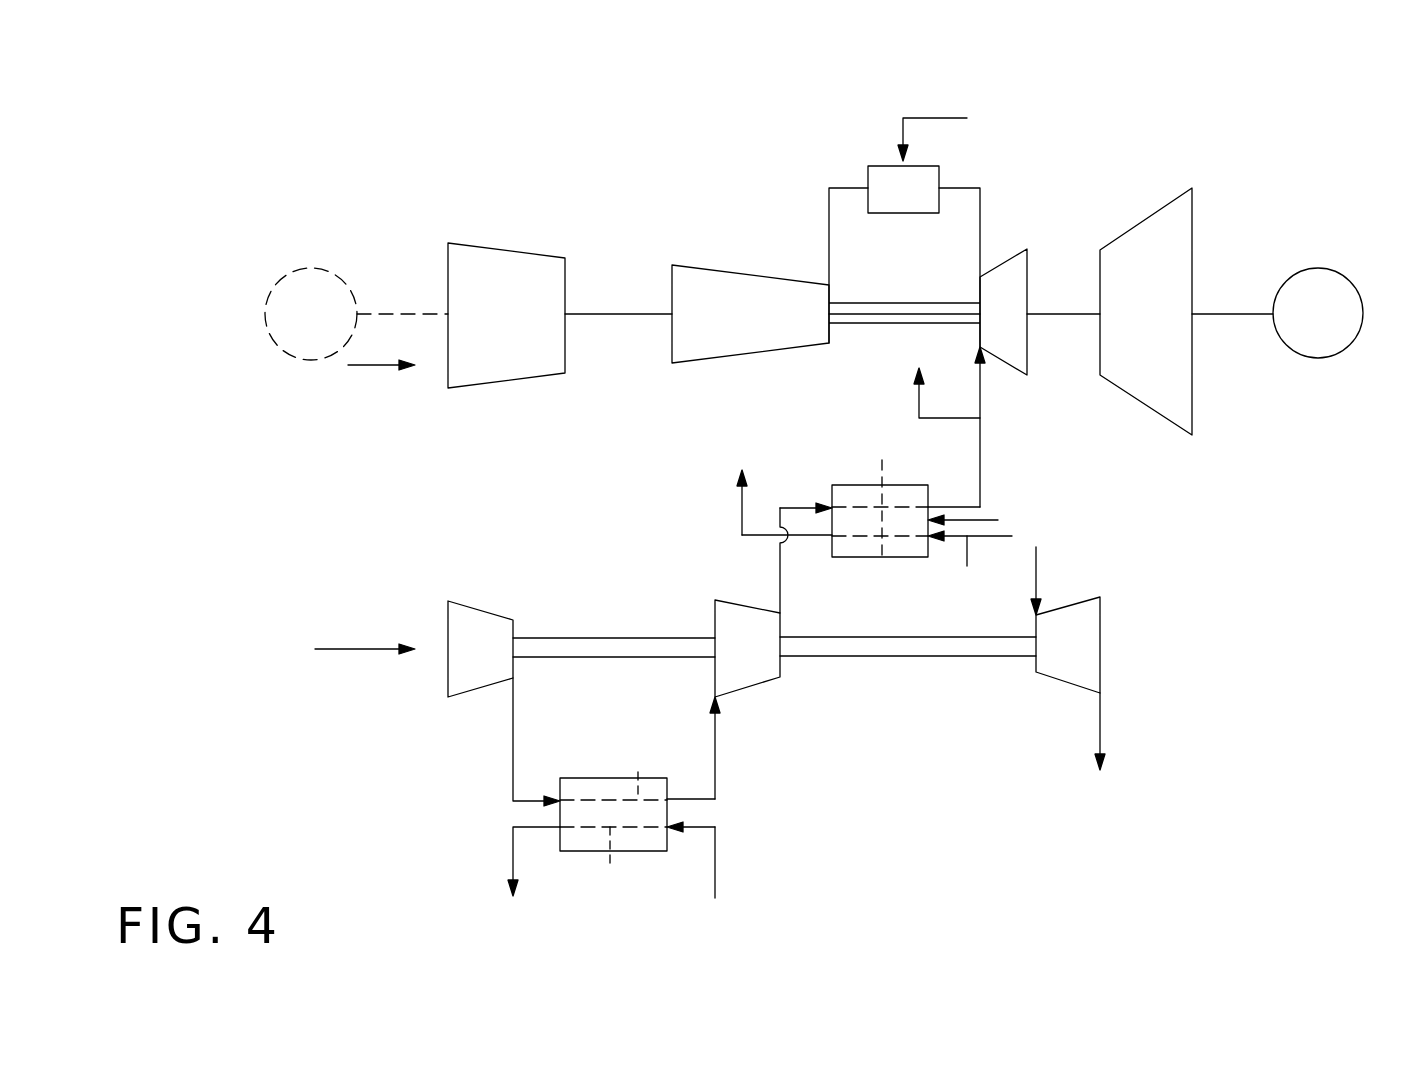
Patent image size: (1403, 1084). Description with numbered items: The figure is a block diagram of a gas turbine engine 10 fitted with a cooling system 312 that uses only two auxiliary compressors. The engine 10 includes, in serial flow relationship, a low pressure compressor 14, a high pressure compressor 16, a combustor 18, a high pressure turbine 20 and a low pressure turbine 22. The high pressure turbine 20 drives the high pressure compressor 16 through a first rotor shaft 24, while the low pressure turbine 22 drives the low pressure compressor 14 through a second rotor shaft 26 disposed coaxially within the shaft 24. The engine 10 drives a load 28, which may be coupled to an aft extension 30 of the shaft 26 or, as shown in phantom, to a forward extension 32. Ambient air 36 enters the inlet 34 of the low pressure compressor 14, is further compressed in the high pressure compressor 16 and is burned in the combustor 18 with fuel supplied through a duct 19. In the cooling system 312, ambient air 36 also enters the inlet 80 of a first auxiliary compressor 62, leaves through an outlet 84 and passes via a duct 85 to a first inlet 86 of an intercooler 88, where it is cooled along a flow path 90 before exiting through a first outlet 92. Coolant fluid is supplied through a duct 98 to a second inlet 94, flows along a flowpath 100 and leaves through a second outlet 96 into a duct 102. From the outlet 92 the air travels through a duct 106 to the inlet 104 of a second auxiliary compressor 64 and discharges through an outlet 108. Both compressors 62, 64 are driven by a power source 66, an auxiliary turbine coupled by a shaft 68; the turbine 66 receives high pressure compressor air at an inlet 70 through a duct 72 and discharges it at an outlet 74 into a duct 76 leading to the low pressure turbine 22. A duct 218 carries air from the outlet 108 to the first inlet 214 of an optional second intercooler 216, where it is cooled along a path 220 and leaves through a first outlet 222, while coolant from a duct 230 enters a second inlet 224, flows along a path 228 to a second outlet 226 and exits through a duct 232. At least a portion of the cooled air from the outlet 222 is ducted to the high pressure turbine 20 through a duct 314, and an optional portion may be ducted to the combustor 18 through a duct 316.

The gas turbine engine 10 is at (1305, 131).
The low pressure compressor 14 is at (492, 247).
The high pressure compressor 16 is at (736, 270).
The combustor 18 is at (881, 166).
The duct 19 is at (931, 118).
The high pressure turbine 20 is at (1025, 249).
The low pressure turbine 22 is at (1145, 219).
The first rotor shaft 24 is at (870, 303).
The second rotor shaft 26 is at (1085, 313).
The load 28 is at (291, 270).
The aft extension 30 is at (1222, 313).
The forward extension 32 is at (377, 314).
The inlet 34 is at (447, 378).
The ambient air 36 is at (372, 365).
The first auxiliary compressor 62 is at (473, 590).
The second auxiliary compressor 64 is at (735, 590).
The power source 66 is at (1075, 588).
The shaft 68 is at (585, 637).
The inlet 70 is at (1036, 620).
The duct 72 is at (1040, 553).
The outlet 74 is at (1103, 693).
The duct 76 is at (1100, 718).
The inlet 80 is at (448, 652).
The outlet 84 is at (513, 678).
The duct 85 is at (513, 734).
The first inlet 86 is at (560, 802).
The intercooler 88 is at (565, 764).
The flow path 90 is at (638, 772).
The first outlet 92 is at (693, 765).
The second inlet 94 is at (672, 822).
The second outlet 96 is at (560, 832).
The duct 98 is at (715, 875).
The flowpath 100 is at (611, 868).
The duct 102 is at (513, 856).
The inlet 104 is at (715, 696).
The duct 106 is at (715, 752).
The outlet 108 is at (785, 612).
The first inlet 214 is at (829, 500).
The second intercooler 216 is at (975, 520).
The duct 218 is at (780, 560).
The path 220 is at (882, 460).
The first outlet 222 is at (947, 478).
The second inlet 224 is at (930, 540).
The second outlet 226 is at (832, 545).
The path 228 is at (888, 560).
The duct 230 is at (967, 566).
The duct 232 is at (742, 518).
The cooling system 312 is at (322, 782).
The duct 314 is at (982, 446).
The duct 316 is at (915, 403).